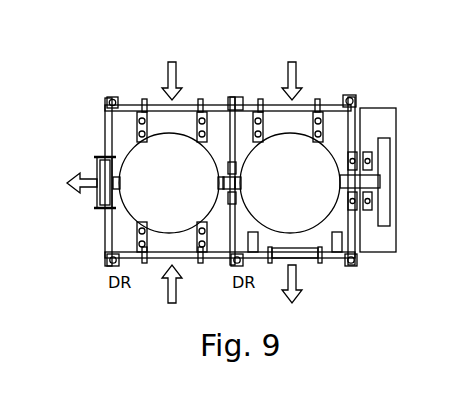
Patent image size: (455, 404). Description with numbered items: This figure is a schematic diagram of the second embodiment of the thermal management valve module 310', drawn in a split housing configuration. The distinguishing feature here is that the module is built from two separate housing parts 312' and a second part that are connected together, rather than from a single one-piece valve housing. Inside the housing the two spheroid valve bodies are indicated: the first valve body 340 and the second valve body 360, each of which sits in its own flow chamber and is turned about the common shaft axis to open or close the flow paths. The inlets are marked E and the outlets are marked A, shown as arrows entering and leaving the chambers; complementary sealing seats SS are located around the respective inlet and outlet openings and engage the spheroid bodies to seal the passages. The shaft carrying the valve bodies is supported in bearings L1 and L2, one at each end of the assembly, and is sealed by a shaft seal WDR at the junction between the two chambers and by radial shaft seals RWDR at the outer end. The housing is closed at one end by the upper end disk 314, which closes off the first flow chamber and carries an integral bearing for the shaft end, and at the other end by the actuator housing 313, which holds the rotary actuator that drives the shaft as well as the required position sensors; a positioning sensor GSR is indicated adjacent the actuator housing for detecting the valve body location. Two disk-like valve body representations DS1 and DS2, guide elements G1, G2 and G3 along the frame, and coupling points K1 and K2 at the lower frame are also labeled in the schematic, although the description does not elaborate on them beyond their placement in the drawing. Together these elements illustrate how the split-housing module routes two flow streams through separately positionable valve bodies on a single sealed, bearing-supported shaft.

The thermal management valve module 310' is at (280, 153).
The housing part 312' is at (162, 146).
The actuator housing 313 is at (358, 258).
The upper end disk 314 is at (103, 258).
The first valve body 340 is at (182, 108).
The second valve body 360 is at (283, 108).
The shaft seal WDR is at (232, 170).
The radial shaft seal RWDR is at (356, 140).
The first disc DS1 is at (287, 183).
The second disc DS2 is at (168, 183).
The positioning sensor GSR is at (378, 180).
The bearing L1 is at (383, 145).
The bearing L2 is at (112, 158).
The guide 1 G1 is at (340, 100).
The guide 2 G2 is at (224, 99).
The guide 3 G3 is at (99, 103).
The coupling 1 K1 is at (245, 250).
The coupling 2 K2 is at (119, 250).
The sealing seat SS is at (140, 302).
The inlet E is at (232, 185).
The outlet A is at (178, 249).